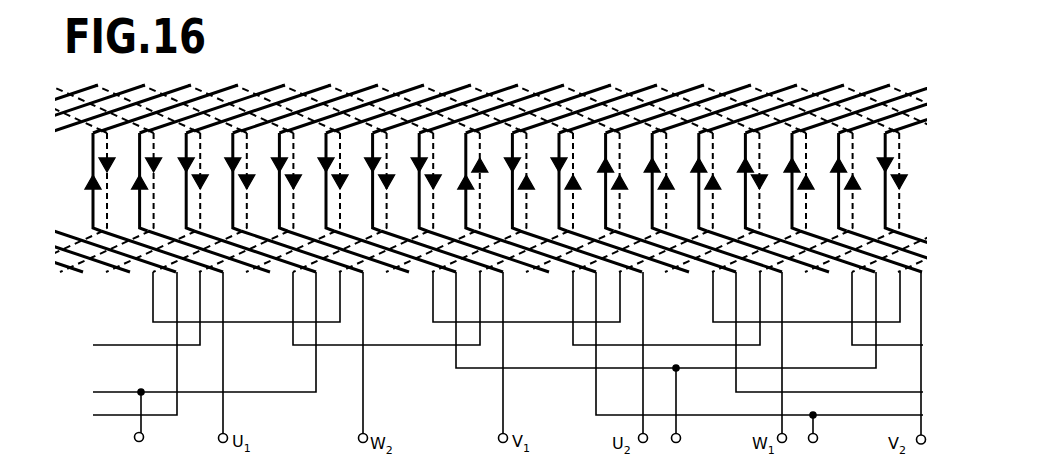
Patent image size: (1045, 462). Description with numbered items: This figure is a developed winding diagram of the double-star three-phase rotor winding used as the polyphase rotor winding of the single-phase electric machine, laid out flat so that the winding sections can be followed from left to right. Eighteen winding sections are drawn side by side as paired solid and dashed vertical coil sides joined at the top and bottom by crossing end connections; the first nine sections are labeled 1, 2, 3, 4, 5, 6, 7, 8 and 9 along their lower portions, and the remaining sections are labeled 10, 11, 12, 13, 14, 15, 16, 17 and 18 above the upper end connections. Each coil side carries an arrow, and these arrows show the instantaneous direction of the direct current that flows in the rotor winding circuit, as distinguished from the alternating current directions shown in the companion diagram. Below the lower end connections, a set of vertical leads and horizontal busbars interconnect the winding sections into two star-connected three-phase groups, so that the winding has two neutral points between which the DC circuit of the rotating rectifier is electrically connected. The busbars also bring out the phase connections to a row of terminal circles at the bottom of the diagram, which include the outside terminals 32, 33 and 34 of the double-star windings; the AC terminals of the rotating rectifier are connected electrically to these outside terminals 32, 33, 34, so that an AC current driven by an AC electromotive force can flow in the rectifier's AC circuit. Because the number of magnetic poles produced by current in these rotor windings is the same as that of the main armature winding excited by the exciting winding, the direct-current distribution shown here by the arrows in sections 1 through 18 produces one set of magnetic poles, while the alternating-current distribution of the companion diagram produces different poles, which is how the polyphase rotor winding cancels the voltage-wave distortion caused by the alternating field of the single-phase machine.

The coil 1 is at (102, 180).
The coil 2 is at (149, 180).
The main armature winding 3 is at (195, 180).
The coil 4 is at (242, 180).
The coil 5 is at (288, 180).
The coil 6 is at (335, 180).
The coil 7 is at (382, 180).
The exciting winding 8 is at (428, 180).
The coil 9 is at (475, 180).
The coil 10 is at (518, 138).
The coil 11 is at (565, 138).
The coil 12 is at (612, 138).
The coil 13 is at (658, 138).
The coil 14 is at (705, 138).
The coil 15 is at (751, 138).
The coil 16 is at (798, 138).
The coil 17 is at (845, 138).
The coil 18 is at (891, 138).
The outside terminal 32 is at (689, 407).
The outside terminal 33 is at (153, 418).
The outside terminal 34 is at (827, 430).